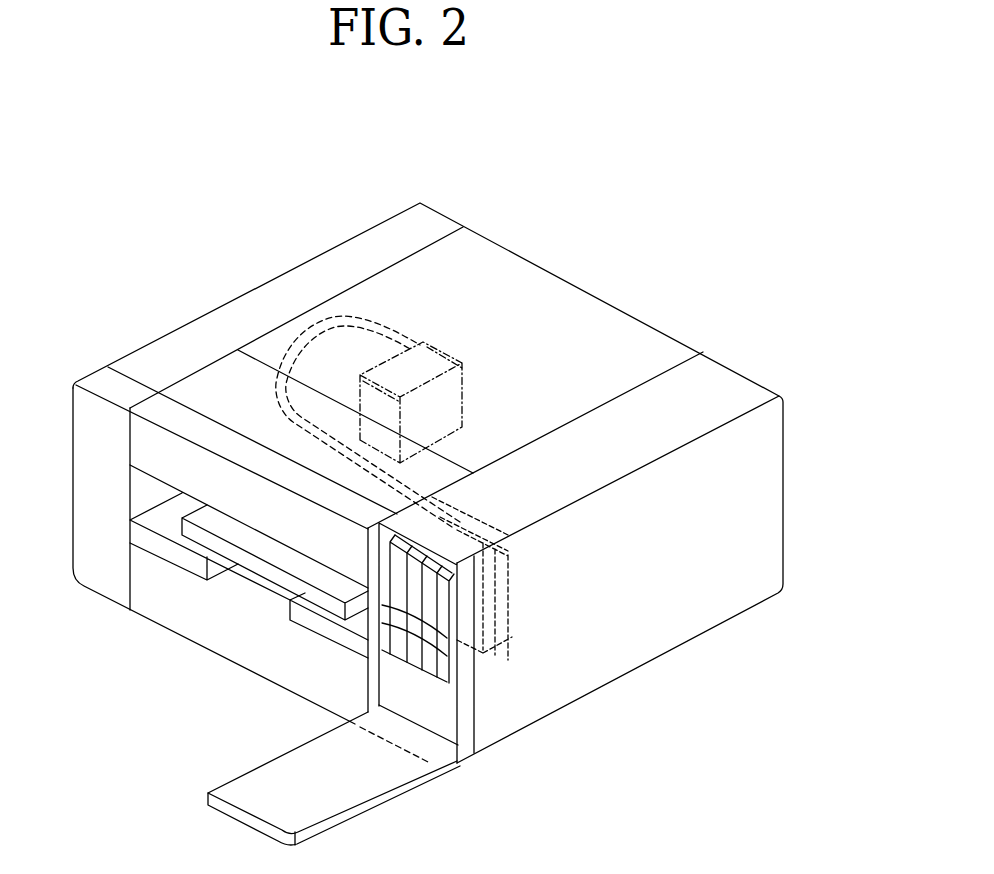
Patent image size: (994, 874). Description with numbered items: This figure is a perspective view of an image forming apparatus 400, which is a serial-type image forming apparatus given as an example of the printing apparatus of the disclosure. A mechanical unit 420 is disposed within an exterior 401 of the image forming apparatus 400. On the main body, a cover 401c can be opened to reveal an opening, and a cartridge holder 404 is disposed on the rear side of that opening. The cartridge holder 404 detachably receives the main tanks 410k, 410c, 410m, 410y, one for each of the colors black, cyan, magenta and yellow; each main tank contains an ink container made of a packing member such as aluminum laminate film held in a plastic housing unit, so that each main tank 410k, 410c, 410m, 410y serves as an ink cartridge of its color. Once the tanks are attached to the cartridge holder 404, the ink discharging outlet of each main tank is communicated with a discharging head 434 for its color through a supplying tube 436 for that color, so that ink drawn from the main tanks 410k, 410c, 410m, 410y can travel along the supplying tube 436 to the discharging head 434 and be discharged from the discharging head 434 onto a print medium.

The image forming apparatus 400 is at (755, 191).
The exterior 401 is at (219, 305).
The cover 401c is at (368, 802).
The cartridge holder 404 is at (359, 638).
The main tank 410k is at (402, 620).
The main tank 410c is at (415, 637).
The main tank 410m is at (432, 653).
The main tank 410y is at (445, 672).
The mechanical unit 420 is at (533, 347).
The discharging head 434 is at (427, 347).
The supplying tube 436 is at (317, 313).